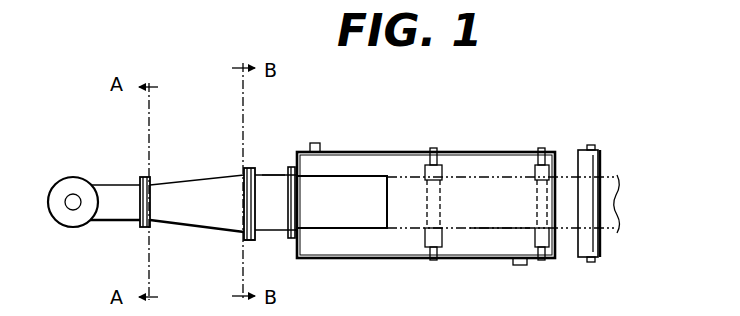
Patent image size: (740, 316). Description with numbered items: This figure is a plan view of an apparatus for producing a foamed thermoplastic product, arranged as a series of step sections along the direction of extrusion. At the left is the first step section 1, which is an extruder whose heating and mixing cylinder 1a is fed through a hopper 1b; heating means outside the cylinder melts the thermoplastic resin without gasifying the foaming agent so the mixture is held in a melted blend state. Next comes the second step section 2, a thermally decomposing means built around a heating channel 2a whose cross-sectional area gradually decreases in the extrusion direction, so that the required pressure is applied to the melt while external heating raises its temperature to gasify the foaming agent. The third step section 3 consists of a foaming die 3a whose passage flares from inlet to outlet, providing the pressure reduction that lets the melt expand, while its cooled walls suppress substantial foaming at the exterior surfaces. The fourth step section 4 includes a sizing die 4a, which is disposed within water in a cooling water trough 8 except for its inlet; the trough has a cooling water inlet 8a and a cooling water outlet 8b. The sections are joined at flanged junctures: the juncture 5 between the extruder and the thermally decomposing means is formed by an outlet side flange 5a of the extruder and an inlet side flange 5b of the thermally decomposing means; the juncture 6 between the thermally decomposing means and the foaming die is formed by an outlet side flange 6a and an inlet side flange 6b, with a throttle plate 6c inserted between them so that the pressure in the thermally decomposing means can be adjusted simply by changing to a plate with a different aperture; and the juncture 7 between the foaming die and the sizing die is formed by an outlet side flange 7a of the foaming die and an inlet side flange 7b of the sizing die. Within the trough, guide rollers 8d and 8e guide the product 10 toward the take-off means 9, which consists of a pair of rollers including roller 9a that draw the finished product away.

The first step section 1 is at (60, 130).
The heating and mixing cylinder 1a is at (112, 222).
The hopper 1b is at (72, 227).
The second step section 2 is at (194, 112).
The heating channel 2a is at (198, 224).
The third step section 3 is at (279, 107).
The foaming die 3a is at (275, 180).
The fourth step section 4 is at (448, 105).
The sizing die 4a is at (377, 232).
The juncture 5 is at (144, 172).
The outlet side flange of the extruder 5a is at (140, 180).
The inlet side flange of the thermally decomposing means 5b is at (151, 180).
The juncture 6 is at (249, 165).
The outlet side flange of the thermally decomposing means 6a is at (243, 170).
The inlet side flange of the foaming die 6b is at (256, 172).
The throttle plate 6c is at (251, 242).
The juncture 7 is at (291, 248).
The outlet side flange of the foaming die 7a is at (289, 240).
The inlet side flange of the sizing die 7b is at (298, 238).
The cooling water trough 8 is at (383, 151).
The cooling water inlet 8a is at (319, 143).
The cooling water outlet 8b is at (523, 266).
The guide roller 8d is at (438, 165).
The guide roller 8e is at (540, 163).
The take-off means 9 is at (602, 160).
The roller 9a is at (602, 246).
The product 10 is at (510, 230).